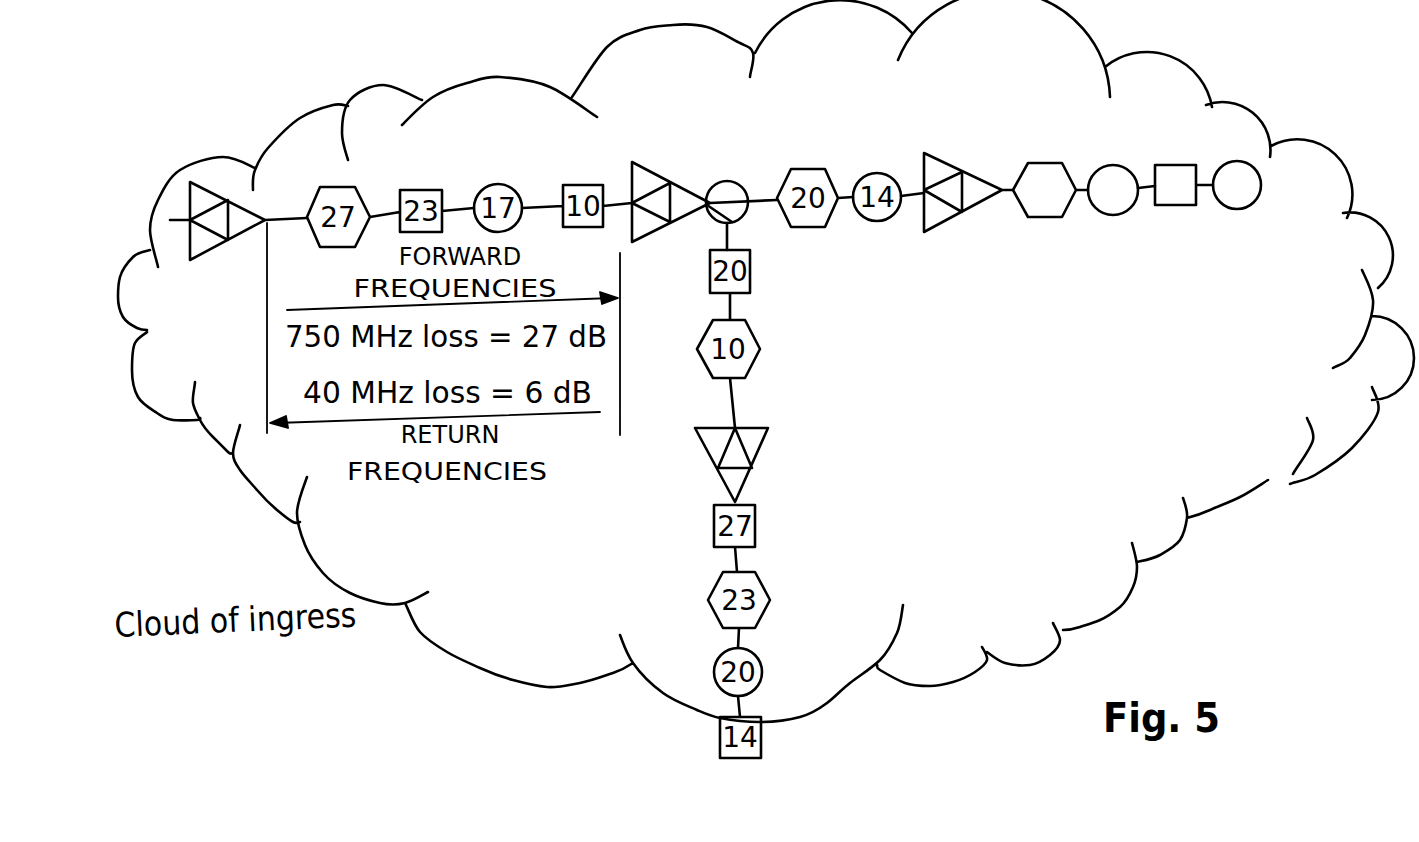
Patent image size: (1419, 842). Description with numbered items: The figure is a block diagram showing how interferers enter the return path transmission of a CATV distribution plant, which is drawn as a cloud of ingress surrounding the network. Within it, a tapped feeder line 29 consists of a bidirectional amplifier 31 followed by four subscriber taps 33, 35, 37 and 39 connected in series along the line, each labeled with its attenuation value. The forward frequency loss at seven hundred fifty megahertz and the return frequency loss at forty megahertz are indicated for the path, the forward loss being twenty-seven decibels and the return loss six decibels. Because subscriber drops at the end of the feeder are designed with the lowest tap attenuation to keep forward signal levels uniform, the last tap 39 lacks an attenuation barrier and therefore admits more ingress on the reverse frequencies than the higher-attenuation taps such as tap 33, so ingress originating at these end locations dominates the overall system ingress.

The tapped feeder line 29 is at (917, 152).
The bidirectional amplifier 31 is at (952, 222).
The subscriber tap 33 is at (1045, 218).
The subscriber tap 35 is at (1117, 214).
The subscriber tap 37 is at (1180, 207).
The subscriber tap 39 is at (1258, 200).